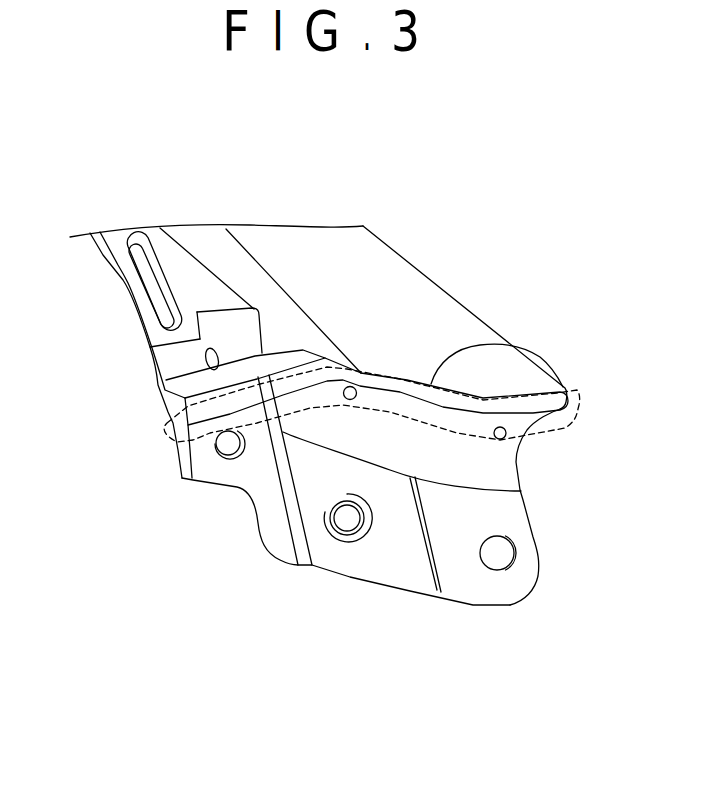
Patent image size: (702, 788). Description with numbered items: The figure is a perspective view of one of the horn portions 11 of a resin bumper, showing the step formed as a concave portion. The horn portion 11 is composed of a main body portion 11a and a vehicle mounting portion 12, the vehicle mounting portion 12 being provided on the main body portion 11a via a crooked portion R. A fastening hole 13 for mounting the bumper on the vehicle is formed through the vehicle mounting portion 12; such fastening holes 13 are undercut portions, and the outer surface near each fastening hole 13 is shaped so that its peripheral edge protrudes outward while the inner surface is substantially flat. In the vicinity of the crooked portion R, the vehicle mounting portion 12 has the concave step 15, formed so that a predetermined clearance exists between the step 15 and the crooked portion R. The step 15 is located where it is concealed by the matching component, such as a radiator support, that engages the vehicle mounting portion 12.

The horn portion 11 is at (476, 165).
The main body portion 11a is at (373, 237).
The crooked portion R is at (510, 342).
The vehicle mounting portion 12 is at (408, 575).
The fastening hole 13 is at (348, 541).
The step 15 is at (443, 407).